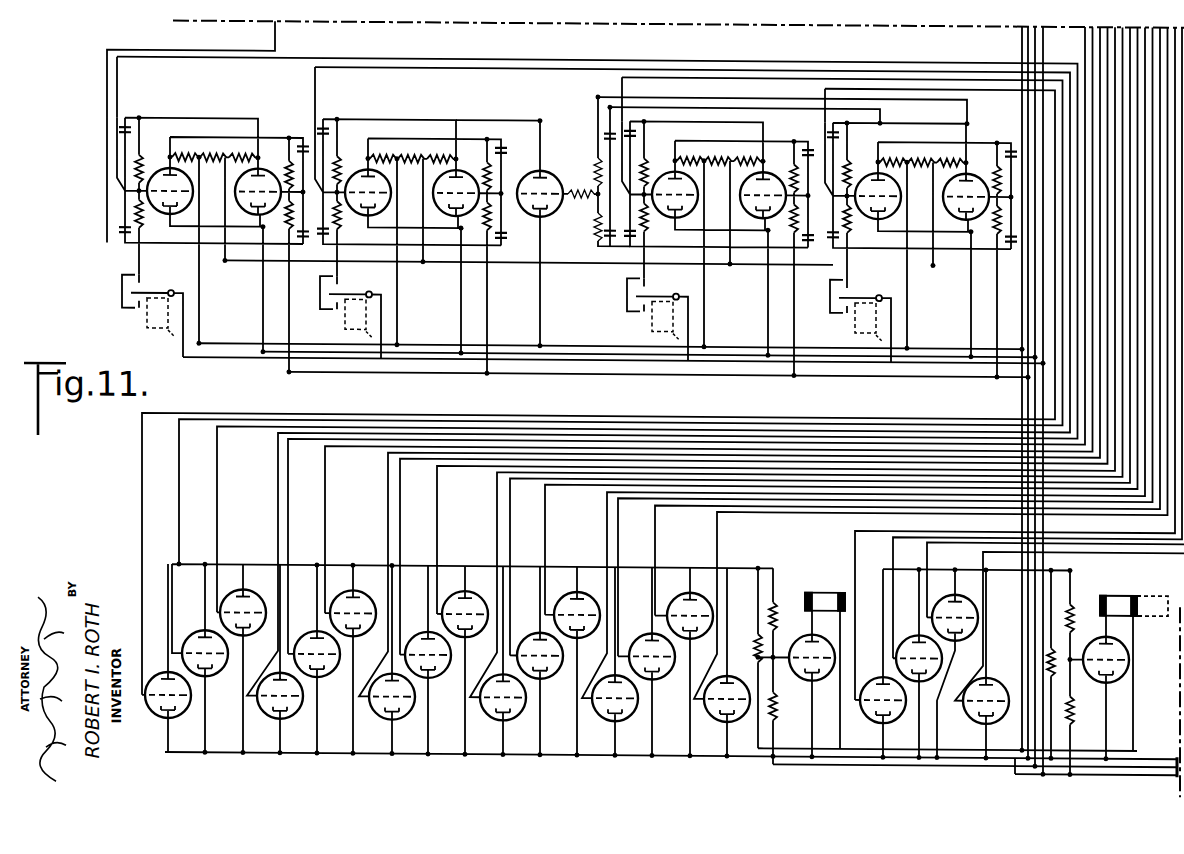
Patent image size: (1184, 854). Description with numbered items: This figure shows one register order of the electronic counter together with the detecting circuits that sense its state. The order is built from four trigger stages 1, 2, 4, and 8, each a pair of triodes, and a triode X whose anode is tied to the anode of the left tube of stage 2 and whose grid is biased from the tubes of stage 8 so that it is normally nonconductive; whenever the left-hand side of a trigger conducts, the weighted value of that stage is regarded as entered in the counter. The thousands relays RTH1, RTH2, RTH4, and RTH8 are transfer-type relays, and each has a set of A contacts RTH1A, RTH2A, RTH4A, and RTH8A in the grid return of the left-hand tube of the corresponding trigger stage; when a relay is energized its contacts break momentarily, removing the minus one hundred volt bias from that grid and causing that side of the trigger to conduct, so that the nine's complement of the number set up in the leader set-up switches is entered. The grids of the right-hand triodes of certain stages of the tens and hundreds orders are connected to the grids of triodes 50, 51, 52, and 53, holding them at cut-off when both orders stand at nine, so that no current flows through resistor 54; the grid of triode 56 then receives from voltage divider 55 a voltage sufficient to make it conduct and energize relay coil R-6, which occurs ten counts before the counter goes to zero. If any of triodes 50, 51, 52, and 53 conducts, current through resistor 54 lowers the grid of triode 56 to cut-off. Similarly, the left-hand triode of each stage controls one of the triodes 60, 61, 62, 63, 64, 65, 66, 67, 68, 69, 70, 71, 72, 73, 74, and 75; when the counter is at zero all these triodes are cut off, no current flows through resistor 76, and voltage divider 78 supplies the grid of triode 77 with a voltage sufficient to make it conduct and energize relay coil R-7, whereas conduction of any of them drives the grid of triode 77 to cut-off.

The trigger stage 1 is at (213, 244).
The trigger stage 2 is at (427, 221).
The trigger stage 4 is at (704, 227).
The trigger stage 8 is at (921, 234).
The triode X is at (549, 184).
The thousands relay RTH1 is at (170, 334).
The relay contacts RTH1A is at (142, 292).
The thousands relay RTH2 is at (348, 331).
The relay contacts RTH2A is at (341, 292).
The thousands relay RTH4 is at (653, 331).
The relay contacts RTH4A is at (647, 292).
The thousands relay RTH8 is at (856, 331).
The relay contacts RTH8A is at (850, 292).
The triode 50 is at (869, 723).
The triode 51 is at (915, 626).
The triode 52 is at (956, 594).
The triode 53 is at (1008, 669).
The resistor 54 is at (1060, 661).
The voltage divider 55 is at (1074, 712).
The triode 56 is at (1116, 680).
The relay coil R-6 is at (1102, 588).
The relay coil R-7 is at (838, 587).
The triode 60 is at (166, 670).
The triode 61 is at (204, 626).
The triode 62 is at (242, 586).
The triode 63 is at (266, 723).
The triode 64 is at (316, 627).
The triode 65 is at (358, 596).
The triode 66 is at (379, 723).
The triode 67 is at (427, 627).
The triode 68 is at (467, 596).
The triode 69 is at (489, 723).
The triode 70 is at (537, 627).
The triode 71 is at (591, 596).
The triode 72 is at (602, 723).
The triode 73 is at (649, 627).
The triode 74 is at (702, 596).
The triode 75 is at (712, 723).
The resistor 76 is at (754, 638).
The triode 77 is at (820, 681).
The voltage divider 78 is at (780, 710).